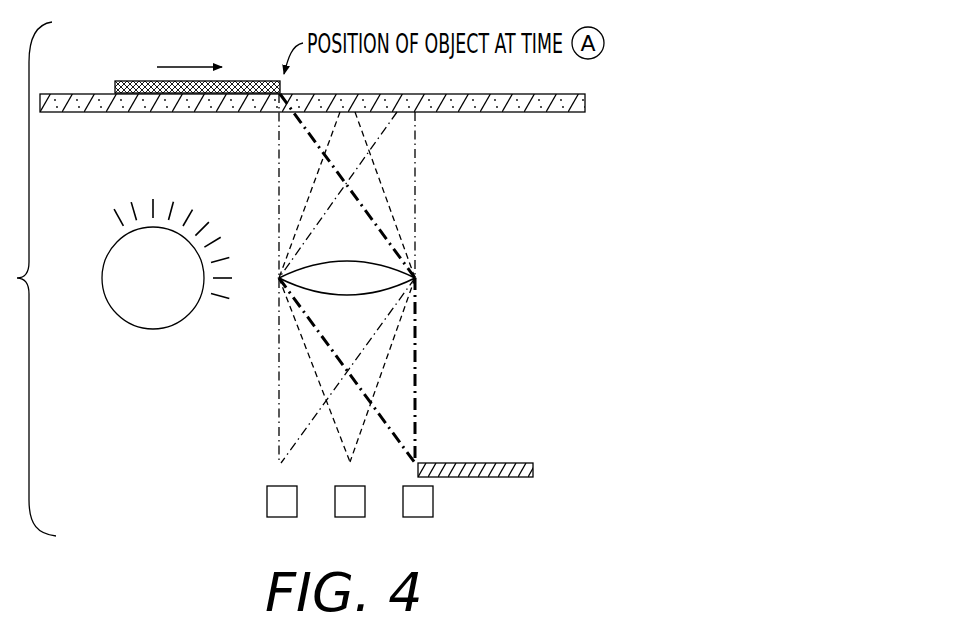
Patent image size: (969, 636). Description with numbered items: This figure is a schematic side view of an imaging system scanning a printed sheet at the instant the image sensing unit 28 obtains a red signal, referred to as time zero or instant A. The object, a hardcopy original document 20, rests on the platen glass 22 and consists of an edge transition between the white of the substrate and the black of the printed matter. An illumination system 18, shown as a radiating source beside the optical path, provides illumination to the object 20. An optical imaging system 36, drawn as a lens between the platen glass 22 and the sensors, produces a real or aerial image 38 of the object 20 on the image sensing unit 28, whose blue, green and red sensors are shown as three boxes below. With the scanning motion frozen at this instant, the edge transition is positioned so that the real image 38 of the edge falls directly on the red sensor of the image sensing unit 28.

The illumination system 18 is at (183, 320).
The hardcopy original document 20 is at (243, 81).
The platen glass 22 is at (586, 101).
The image sensing unit 28 is at (354, 522).
The optical imaging system 36 is at (418, 274).
The real image 38 is at (498, 463).